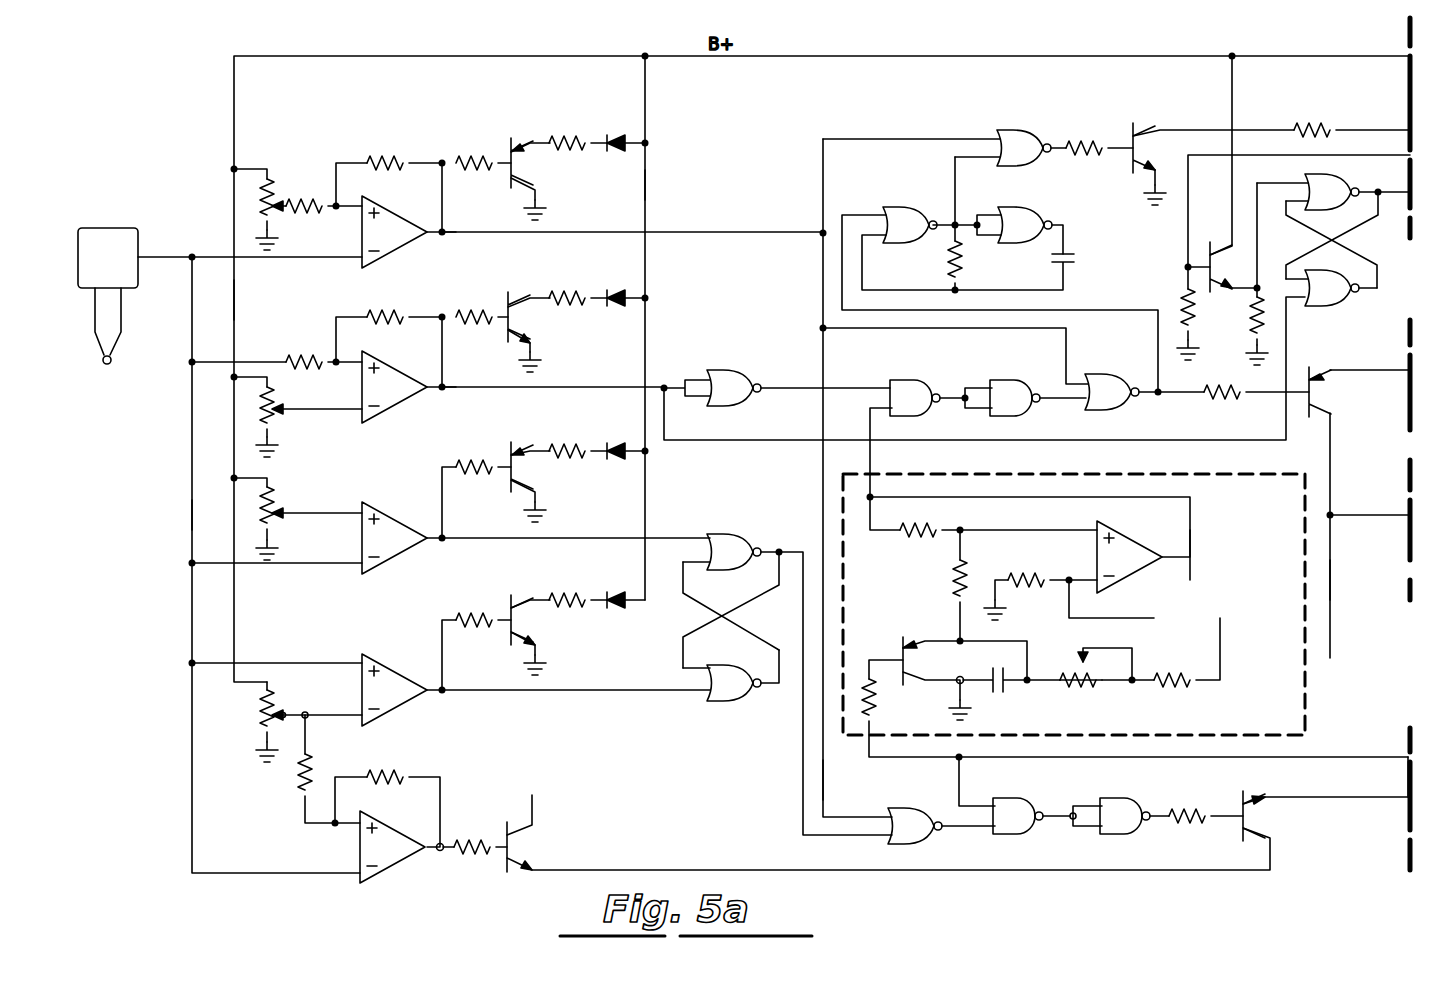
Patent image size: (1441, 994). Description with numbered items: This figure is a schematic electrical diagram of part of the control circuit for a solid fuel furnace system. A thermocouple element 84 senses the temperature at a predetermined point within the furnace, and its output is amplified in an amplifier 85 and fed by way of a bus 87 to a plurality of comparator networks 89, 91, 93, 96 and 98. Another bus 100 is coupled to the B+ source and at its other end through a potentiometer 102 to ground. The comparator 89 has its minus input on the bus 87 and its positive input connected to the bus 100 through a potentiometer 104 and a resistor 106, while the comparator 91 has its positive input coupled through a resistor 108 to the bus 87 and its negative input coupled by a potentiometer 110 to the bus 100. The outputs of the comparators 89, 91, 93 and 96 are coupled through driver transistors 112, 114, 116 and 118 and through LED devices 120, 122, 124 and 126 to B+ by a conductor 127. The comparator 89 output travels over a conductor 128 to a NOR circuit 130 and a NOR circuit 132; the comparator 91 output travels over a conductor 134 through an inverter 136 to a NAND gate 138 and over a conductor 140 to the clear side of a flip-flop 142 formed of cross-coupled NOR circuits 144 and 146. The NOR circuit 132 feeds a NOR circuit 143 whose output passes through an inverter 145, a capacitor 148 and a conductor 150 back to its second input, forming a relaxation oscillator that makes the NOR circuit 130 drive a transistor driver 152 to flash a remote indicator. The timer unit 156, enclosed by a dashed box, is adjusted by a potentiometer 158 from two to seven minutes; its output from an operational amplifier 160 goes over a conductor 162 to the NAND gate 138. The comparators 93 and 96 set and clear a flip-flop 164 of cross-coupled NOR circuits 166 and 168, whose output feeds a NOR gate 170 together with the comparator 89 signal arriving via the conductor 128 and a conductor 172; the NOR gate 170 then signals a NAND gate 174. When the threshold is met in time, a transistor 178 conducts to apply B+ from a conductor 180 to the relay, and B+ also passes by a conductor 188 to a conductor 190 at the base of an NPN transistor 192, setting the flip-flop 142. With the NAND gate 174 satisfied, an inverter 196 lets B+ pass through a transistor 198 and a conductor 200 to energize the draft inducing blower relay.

The thermocouple element 84 is at (100, 352).
The amplifier 85 is at (105, 228).
The bus 87 is at (190, 512).
The comparator 89 is at (383, 212).
The comparator 91 is at (383, 368).
The comparator 93 is at (383, 519).
The comparator 96 is at (383, 671).
The comparator 98 is at (381, 828).
The bus 100 is at (236, 298).
The potentiometer 102 is at (262, 714).
The potentiometer 104 is at (275, 222).
The resistor 106 is at (306, 200).
The resistor 108 is at (290, 370).
The potentiometer 110 is at (284, 420).
The driver transistor 112 is at (530, 140).
The driver transistor 114 is at (530, 296).
The driver transistor 116 is at (530, 448).
The driver transistor 118 is at (530, 600).
The LED device 120 is at (618, 140).
The LED device 122 is at (618, 296).
The LED device 124 is at (618, 448).
The LED device 126 is at (618, 598).
The conductor 127 is at (647, 184).
The conductor 128 is at (712, 236).
The NOR circuit 130 is at (1010, 130).
The NOR circuit 132 is at (1092, 374).
The conductor 134 is at (568, 392).
The inverter 136 is at (716, 372).
The NAND gate 138 is at (904, 388).
The conductor 140 is at (712, 442).
The flip-flop 142 is at (1392, 230).
The NOR circuit 143 is at (892, 208).
The NOR circuit 144 is at (1340, 178).
The inverter 145 is at (1014, 208).
The NOR circuit 146 is at (1322, 306).
The capacitor 148 is at (1080, 258).
The conductor 150 is at (1030, 292).
The transistor driver 152 is at (1146, 128).
The timer unit 156 is at (1245, 482).
The potentiometer 158 is at (1072, 690).
The operational amplifier 160 is at (1122, 540).
The conductor 162 is at (1192, 549).
The flip-flop 164 is at (782, 630).
The NOR circuit 166 is at (716, 538).
The NOR circuit 168 is at (718, 705).
The NOR gate 170 is at (924, 840).
The conductor 172 is at (825, 779).
The NAND gate 174 is at (1006, 808).
The transistor 178 is at (1320, 388).
The conductor 180 is at (1332, 575).
The conductor 188 is at (1385, 517).
The conductor 190 is at (1384, 152).
The NPN transistor 192 is at (1233, 292).
The inverter 196 is at (1112, 808).
The transistor 198 is at (1250, 806).
The conductor 200 is at (1390, 802).